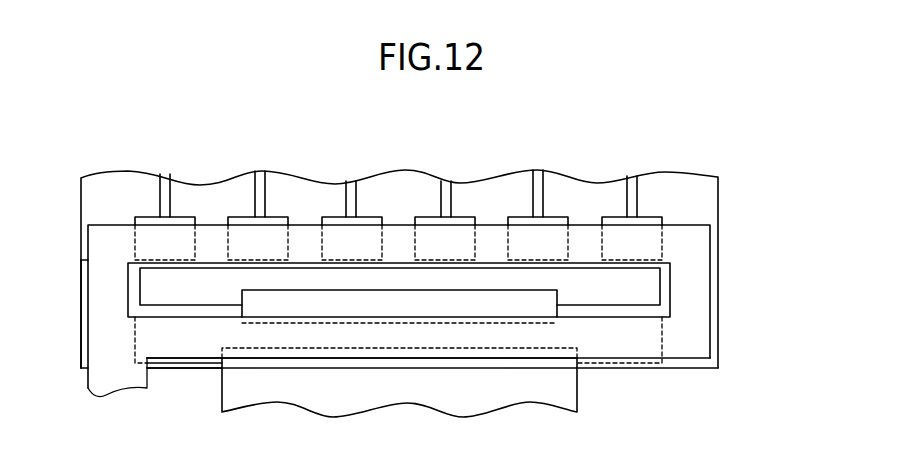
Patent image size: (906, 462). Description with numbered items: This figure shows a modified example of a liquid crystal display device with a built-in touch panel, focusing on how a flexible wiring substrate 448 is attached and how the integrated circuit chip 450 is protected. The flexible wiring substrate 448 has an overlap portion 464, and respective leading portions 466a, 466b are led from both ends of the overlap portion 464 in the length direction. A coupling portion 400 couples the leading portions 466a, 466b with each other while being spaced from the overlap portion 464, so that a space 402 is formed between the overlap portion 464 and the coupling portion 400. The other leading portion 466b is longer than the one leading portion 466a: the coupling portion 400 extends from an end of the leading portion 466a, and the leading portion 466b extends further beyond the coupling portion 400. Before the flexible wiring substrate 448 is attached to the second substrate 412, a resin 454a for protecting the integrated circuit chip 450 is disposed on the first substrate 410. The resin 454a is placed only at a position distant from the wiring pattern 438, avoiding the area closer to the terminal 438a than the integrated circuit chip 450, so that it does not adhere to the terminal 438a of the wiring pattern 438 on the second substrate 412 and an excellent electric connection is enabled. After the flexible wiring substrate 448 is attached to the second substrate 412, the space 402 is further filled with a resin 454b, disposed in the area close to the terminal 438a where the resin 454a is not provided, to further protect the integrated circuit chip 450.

The coupling portion 400 is at (630, 350).
The space 402 is at (665, 287).
The first substrate 410 is at (718, 352).
The second substrate 412 is at (718, 210).
The wiring pattern 438 is at (640, 190).
The terminal 438a is at (650, 212).
The flexible wiring substrate 448 is at (723, 322).
The integrated circuit chip 450 is at (485, 308).
The resin 454a is at (202, 312).
The resin 454b is at (163, 292).
The overlap portion 464 is at (307, 235).
The leading portion 466a is at (702, 272).
The leading portion 466b is at (100, 347).